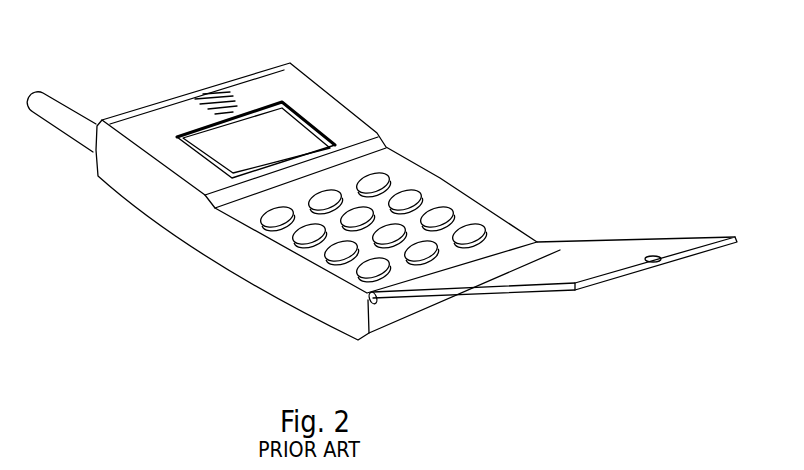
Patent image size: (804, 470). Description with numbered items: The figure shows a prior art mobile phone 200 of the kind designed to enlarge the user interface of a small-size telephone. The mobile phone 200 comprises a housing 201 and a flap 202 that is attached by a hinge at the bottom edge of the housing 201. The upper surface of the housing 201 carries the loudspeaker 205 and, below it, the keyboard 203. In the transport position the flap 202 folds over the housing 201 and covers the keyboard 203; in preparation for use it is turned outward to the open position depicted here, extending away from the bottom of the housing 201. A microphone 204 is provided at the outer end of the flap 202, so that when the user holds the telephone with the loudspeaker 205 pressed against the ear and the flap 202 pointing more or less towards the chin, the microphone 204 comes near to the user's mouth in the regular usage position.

The mobile phone 200 is at (112, 320).
The housing 201 is at (178, 233).
The flap 202 is at (542, 273).
The keyboard 203 is at (378, 229).
The microphone 204 is at (653, 255).
The loudspeaker 205 is at (215, 103).